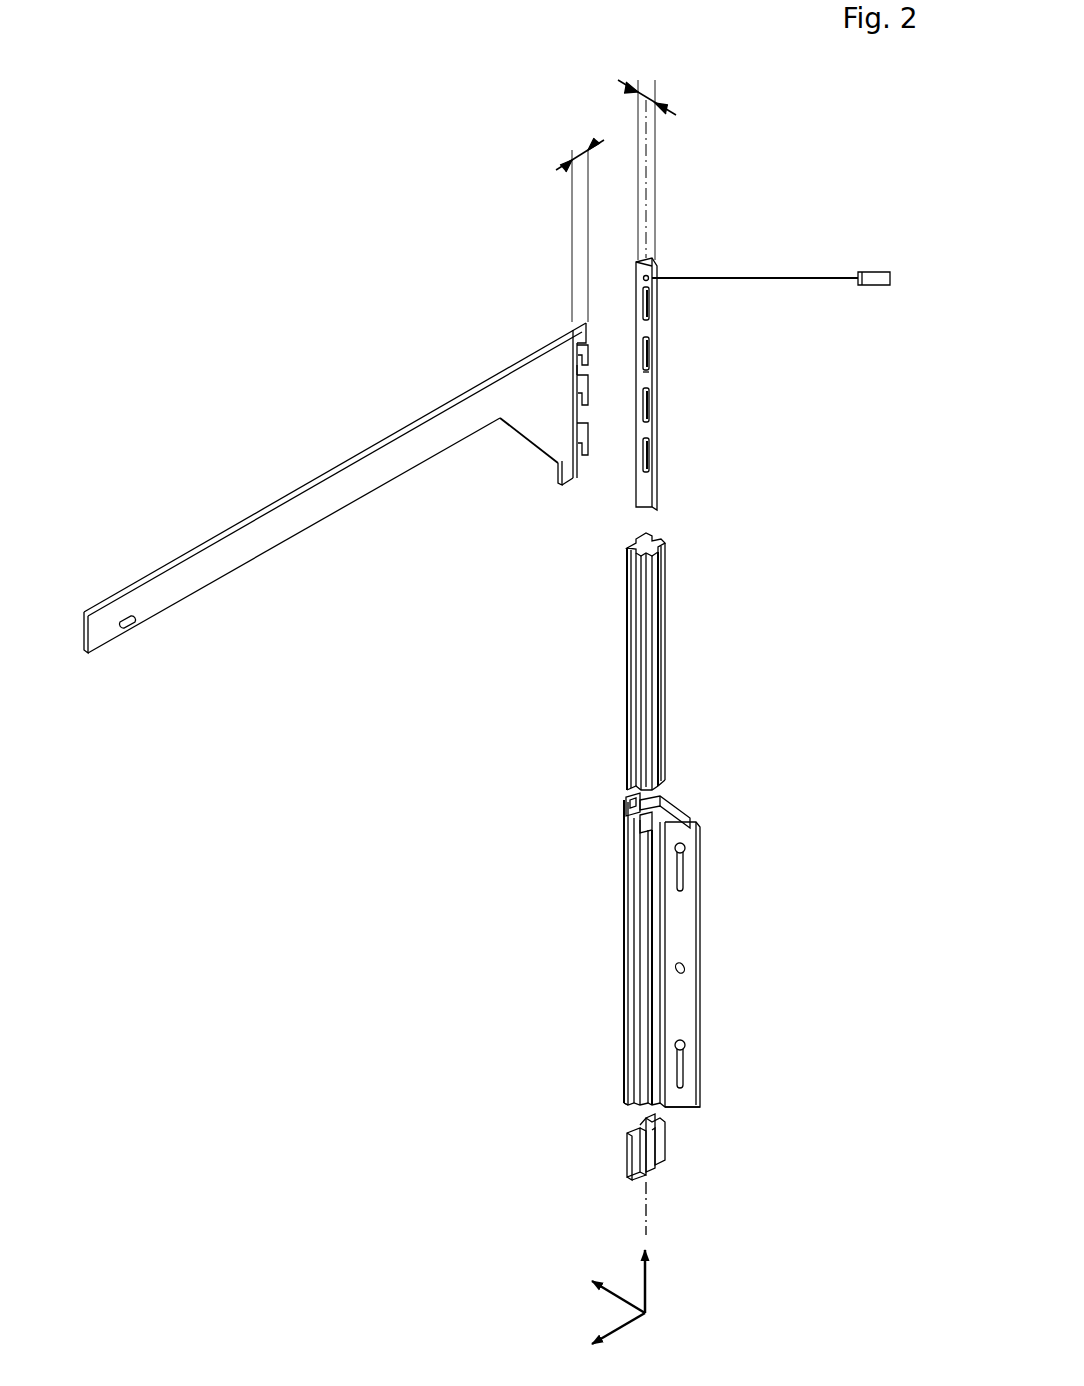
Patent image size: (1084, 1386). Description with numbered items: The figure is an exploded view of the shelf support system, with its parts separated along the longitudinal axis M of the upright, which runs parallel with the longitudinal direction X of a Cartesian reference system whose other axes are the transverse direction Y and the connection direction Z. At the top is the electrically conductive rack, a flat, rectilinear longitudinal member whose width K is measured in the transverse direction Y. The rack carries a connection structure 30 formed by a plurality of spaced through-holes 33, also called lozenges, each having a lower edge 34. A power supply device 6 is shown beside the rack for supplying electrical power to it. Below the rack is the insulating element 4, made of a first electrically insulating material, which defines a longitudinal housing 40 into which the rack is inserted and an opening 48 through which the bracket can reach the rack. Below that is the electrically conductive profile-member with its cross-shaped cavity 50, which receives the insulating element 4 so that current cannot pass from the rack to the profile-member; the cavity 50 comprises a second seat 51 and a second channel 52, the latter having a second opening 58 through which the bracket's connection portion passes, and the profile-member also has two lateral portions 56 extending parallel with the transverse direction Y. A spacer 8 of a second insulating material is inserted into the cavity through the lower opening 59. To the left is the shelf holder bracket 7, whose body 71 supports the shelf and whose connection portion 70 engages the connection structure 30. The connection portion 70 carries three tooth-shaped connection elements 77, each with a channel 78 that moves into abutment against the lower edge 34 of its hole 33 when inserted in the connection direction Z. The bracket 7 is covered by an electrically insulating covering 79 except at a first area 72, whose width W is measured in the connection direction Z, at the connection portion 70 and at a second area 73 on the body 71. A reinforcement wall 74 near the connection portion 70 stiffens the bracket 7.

The insulating element 4 is at (649, 637).
The power supply device 6 is at (814, 270).
The shelf holder bracket 7 is at (358, 500).
The spacer 8 is at (670, 1147).
The connection structure 30 is at (690, 384).
The through-holes 33 is at (649, 305).
The lower edge 34 is at (643, 372).
The housing 40 is at (657, 535).
The opening 48 is at (628, 645).
The cavity 50 is at (652, 799).
The second seat 51 is at (674, 826).
The second channel 52 is at (632, 825).
The lateral portions 56 is at (647, 936).
The second opening 58 is at (628, 797).
The lower opening 59 is at (628, 1105).
The connection portion 70 is at (572, 481).
The body 71 is at (268, 527).
The first area 72 is at (583, 352).
The second area 73 is at (127, 630).
The reinforcement wall 74 is at (533, 415).
The connection elements 77 is at (584, 337).
The channel 78 is at (578, 398).
The electrically insulating covering 79 is at (314, 500).
The width of the first area W is at (582, 160).
The width of the rack K is at (652, 92).
The longitudinal axis M is at (650, 1195).
The longitudinal direction X is at (648, 1282).
The transverse direction Y is at (605, 1295).
The connection direction Z is at (618, 1330).